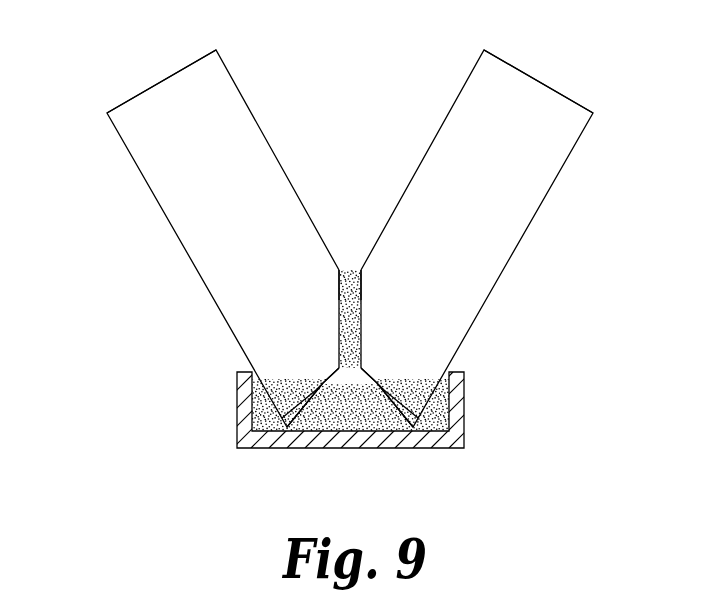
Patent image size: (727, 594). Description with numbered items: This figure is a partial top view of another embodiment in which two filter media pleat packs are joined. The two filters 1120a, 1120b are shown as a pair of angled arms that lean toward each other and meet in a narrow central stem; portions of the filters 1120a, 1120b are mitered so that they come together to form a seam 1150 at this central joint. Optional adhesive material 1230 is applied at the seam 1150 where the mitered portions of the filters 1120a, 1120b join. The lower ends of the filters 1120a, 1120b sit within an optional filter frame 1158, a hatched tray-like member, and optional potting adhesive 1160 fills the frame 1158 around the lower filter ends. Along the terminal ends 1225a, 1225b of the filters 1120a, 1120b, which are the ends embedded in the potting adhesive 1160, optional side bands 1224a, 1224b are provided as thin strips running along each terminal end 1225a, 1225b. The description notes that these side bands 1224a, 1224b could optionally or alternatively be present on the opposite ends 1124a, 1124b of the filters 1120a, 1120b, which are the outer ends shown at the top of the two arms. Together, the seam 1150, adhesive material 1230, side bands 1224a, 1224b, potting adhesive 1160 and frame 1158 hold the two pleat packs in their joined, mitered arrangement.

The filter 1120a is at (150, 167).
The filter 1120b is at (542, 180).
The filter end 1124a is at (155, 85).
The filter end 1124b is at (552, 43).
The adhesive material 1230 is at (347, 278).
The seam 1150 is at (352, 315).
The filter frame 1158 is at (243, 408).
The potting adhesive 1160 is at (447, 415).
The side band 1224a is at (292, 428).
The side band 1224b is at (409, 428).
The terminal end 1225a is at (322, 385).
The terminal end 1225b is at (378, 385).